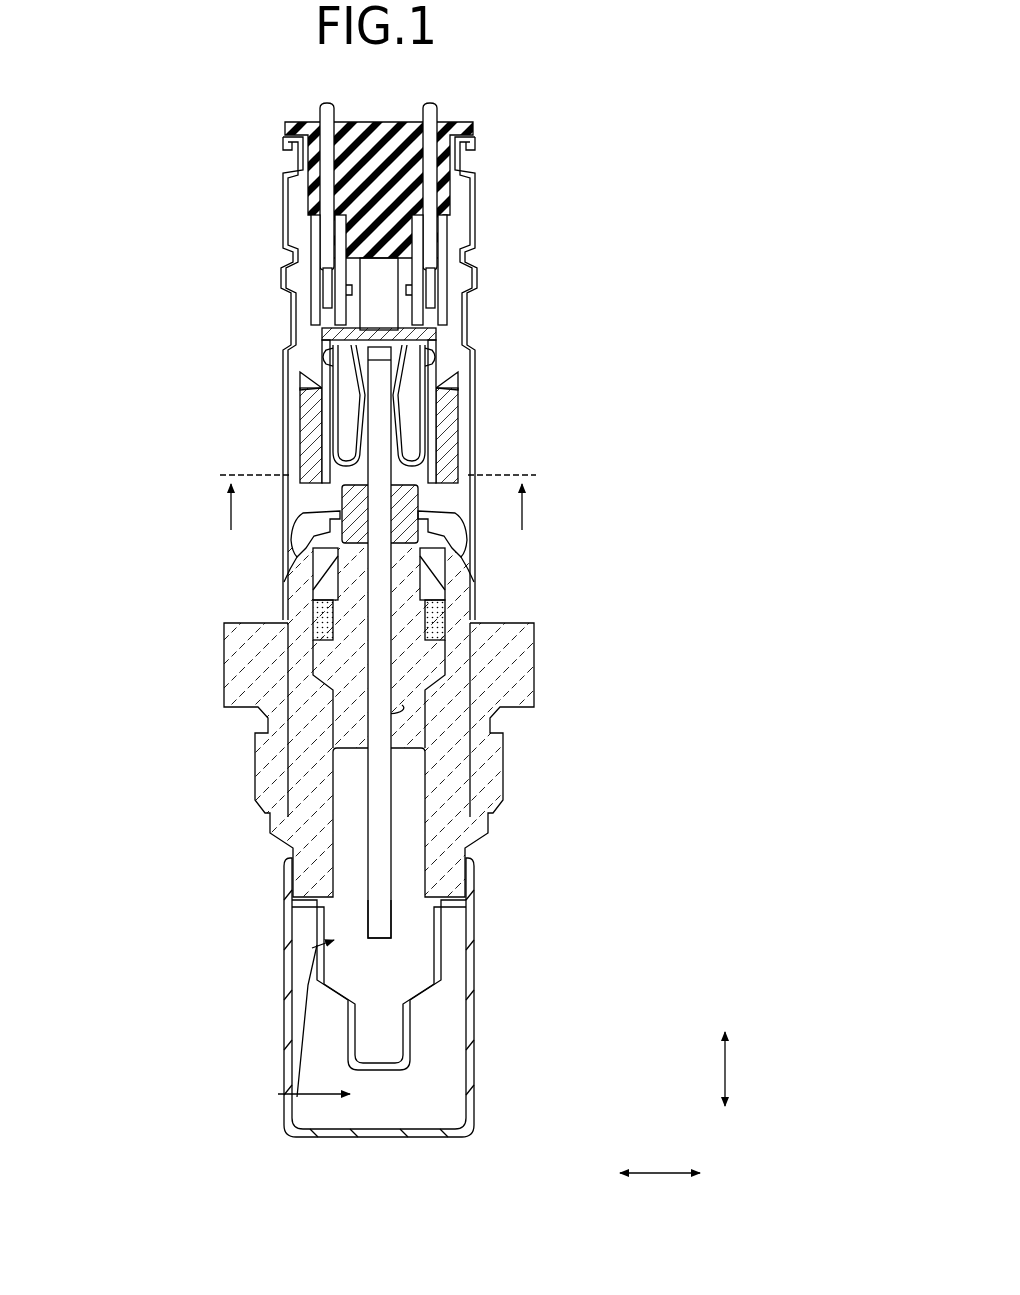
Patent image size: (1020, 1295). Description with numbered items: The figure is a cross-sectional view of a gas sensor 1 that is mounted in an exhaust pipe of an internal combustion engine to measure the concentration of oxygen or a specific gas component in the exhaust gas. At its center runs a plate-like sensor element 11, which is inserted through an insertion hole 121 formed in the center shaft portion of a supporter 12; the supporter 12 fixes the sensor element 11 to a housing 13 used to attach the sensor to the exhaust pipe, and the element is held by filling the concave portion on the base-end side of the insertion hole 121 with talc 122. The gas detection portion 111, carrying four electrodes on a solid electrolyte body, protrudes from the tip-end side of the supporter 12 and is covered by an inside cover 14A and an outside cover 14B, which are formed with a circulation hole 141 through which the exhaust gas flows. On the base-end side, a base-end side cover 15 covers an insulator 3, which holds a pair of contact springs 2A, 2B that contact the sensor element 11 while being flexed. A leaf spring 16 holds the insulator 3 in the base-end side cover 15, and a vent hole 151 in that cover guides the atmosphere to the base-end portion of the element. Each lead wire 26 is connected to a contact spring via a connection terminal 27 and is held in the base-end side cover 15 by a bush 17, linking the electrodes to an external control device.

The gas sensor 1 is at (499, 129).
The bush 17 is at (318, 173).
The lead wire 26 is at (430, 186).
The vent hole 151 is at (290, 237).
The base-end side cover 15 is at (285, 292).
The connection terminal 27 is at (425, 313).
The leaf spring 16 is at (302, 390).
The contact spring 2B is at (443, 368).
The contact spring 2A is at (428, 406).
The insulator 3 is at (320, 468).
The talc 122 is at (403, 512).
The housing 13 is at (250, 672).
The supporter 12 is at (412, 663).
The insertion hole 121 is at (402, 705).
The sensor element 11 is at (382, 802).
The gas detection portion 111 is at (378, 922).
The inside cover 14A is at (441, 967).
The outside cover 14B is at (468, 1036).
The circulation hole 141 is at (468, 1097).